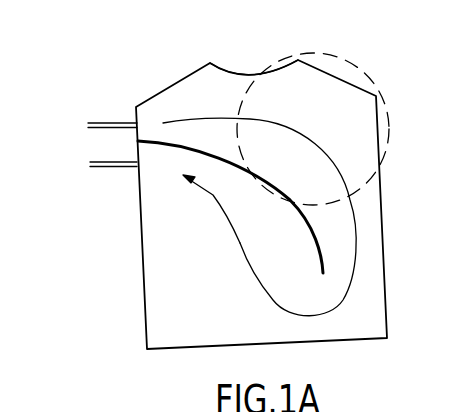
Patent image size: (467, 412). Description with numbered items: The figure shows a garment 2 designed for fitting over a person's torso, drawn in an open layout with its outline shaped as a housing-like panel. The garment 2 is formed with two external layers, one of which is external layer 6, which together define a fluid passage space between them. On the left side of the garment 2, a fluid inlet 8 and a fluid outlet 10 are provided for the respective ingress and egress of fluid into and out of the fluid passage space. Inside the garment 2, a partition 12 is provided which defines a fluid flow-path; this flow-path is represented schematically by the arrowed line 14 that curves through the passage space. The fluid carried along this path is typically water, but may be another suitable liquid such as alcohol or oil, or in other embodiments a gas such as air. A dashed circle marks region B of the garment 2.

The garment 2 is at (152, 82).
The external layer 6 is at (217, 93).
The fluid inlet 8 is at (120, 118).
The fluid outlet 10 is at (118, 168).
The partition 12 is at (350, 205).
The arrowed line 14 is at (360, 243).
The detail region B is at (387, 108).